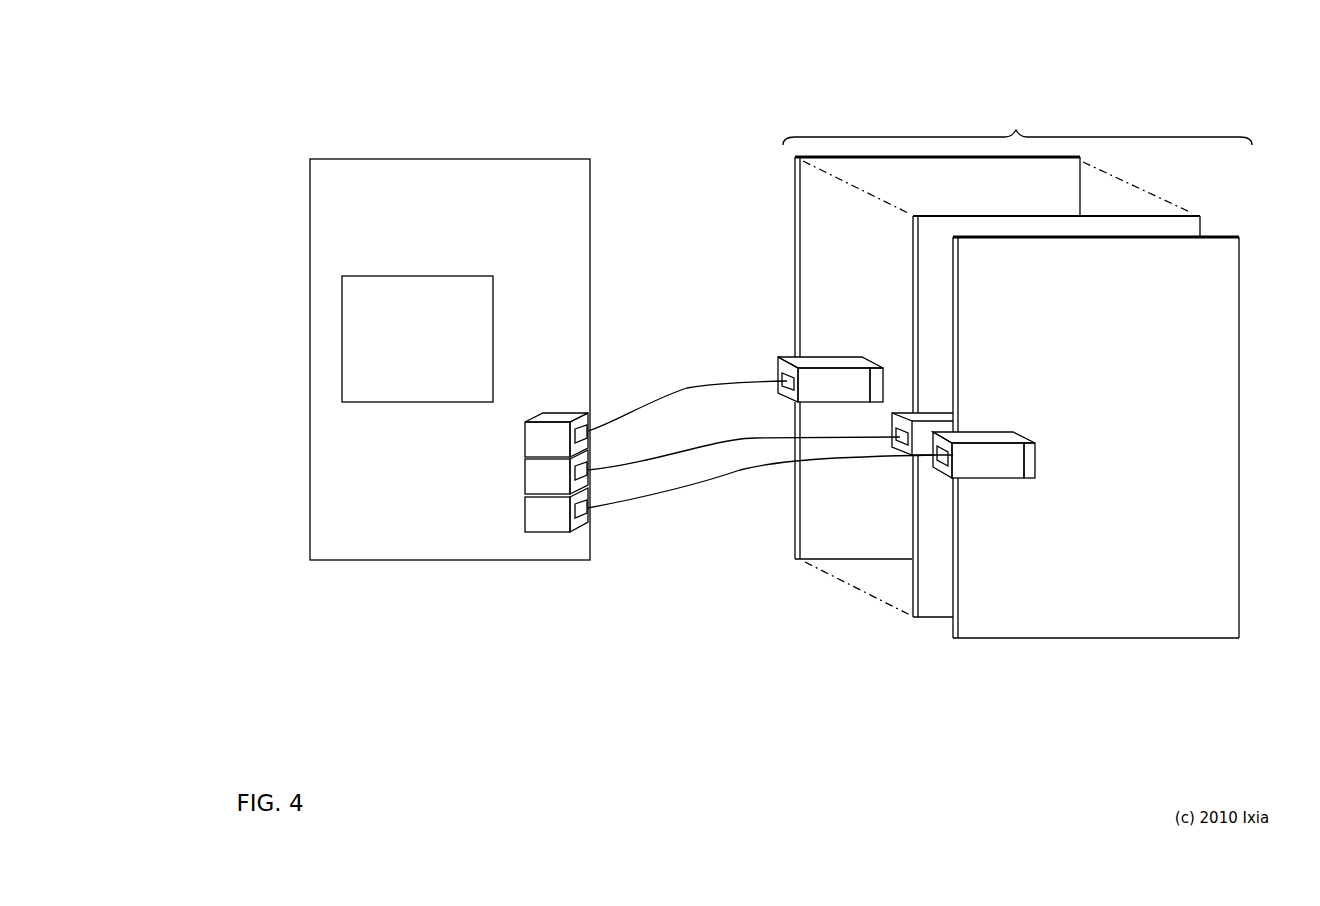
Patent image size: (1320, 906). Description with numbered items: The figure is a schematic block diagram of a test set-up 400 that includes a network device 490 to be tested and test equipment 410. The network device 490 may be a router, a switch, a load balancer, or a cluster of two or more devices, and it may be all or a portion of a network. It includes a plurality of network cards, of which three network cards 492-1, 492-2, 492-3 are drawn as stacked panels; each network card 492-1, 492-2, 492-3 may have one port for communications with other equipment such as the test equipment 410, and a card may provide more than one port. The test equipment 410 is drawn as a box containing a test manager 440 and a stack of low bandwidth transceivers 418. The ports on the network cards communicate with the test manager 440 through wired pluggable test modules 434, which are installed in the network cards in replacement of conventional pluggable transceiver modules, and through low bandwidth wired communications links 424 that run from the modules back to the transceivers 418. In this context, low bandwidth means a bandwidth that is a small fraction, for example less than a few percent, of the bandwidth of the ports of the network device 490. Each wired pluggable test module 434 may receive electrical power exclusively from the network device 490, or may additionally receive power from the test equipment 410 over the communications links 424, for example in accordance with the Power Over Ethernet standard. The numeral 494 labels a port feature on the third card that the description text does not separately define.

The test set-up 400 is at (274, 44).
The test equipment 410 is at (450, 359).
The test manager 440 is at (417, 339).
The low bandwidth transceivers 418 is at (525, 515).
The low bandwidth wired communications links 424 is at (725, 385).
The network device 490 is at (1017, 110).
The network card 492-1 is at (828, 559).
The network card 492-2 is at (929, 619).
The network card 492-3 is at (1080, 638).
The wired pluggable test modules 434 is at (988, 478).
The network device port 494 is at (1027, 478).